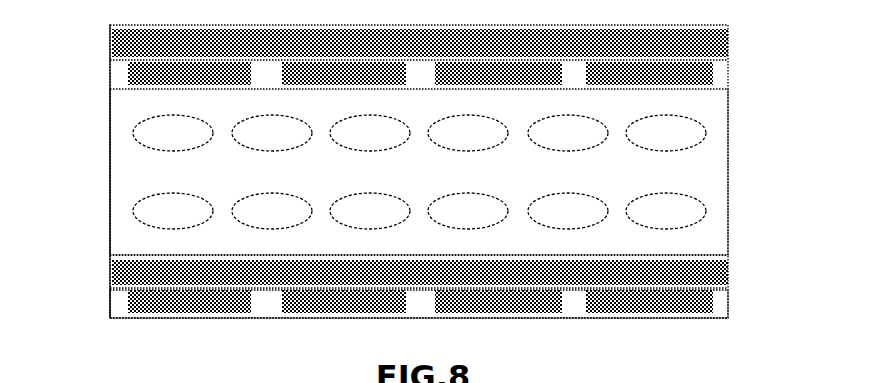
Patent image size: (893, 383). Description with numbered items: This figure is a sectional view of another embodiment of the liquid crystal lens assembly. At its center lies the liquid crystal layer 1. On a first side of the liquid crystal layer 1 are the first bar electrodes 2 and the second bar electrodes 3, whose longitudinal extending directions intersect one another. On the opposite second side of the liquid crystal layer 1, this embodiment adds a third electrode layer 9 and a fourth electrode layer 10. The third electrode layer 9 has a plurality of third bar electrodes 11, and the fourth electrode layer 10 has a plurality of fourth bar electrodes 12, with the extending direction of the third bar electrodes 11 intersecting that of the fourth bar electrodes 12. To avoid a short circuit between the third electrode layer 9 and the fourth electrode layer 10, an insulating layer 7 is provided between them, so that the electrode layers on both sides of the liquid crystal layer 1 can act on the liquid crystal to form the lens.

The liquid crystal layer 1 is at (700, 177).
The first bar electrodes 2 is at (718, 35).
The second bar electrodes 3 is at (705, 65).
The insulating layer 7 is at (100, 281).
The third electrode layer 9 is at (100, 250).
The fourth electrode layer 10 is at (107, 297).
The third bar electrodes 11 is at (713, 257).
The fourth bar electrodes 12 is at (705, 290).